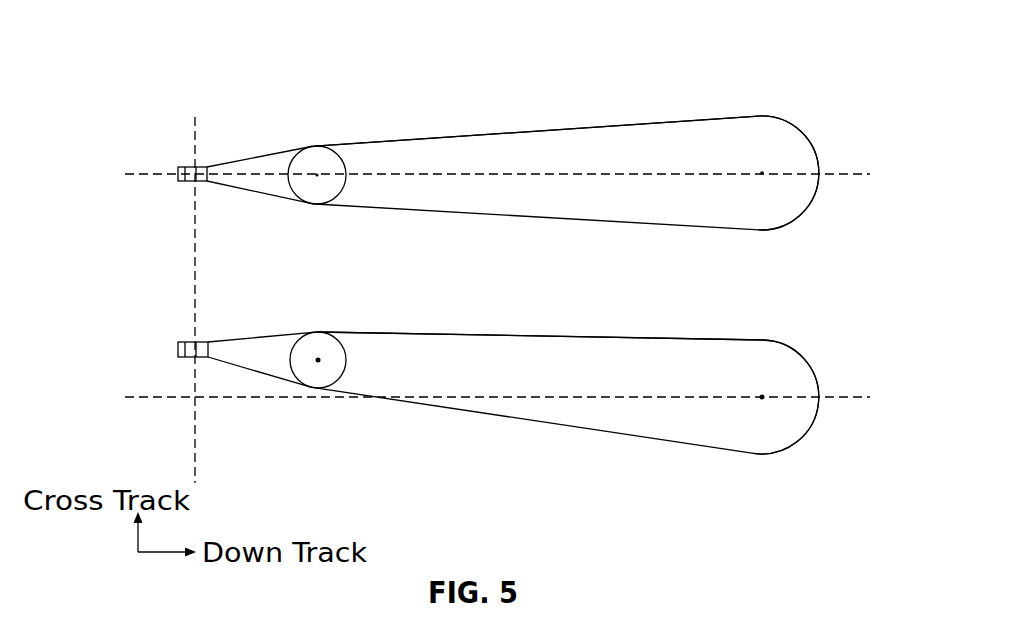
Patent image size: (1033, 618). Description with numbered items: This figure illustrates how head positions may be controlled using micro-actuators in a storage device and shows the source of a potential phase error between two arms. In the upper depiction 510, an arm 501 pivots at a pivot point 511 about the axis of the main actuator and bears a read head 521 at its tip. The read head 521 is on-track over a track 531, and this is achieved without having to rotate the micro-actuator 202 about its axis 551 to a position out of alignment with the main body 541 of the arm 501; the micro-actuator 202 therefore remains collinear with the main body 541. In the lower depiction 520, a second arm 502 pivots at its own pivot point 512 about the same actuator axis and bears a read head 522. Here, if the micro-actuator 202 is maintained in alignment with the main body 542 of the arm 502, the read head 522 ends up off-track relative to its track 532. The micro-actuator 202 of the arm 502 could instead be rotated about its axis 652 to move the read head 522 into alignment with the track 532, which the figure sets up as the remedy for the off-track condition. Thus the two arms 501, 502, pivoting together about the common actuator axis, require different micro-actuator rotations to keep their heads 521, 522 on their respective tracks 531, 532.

The on-track arm configuration 510 is at (486, 227).
The off-track arm configuration 520 is at (490, 348).
The read head 521 is at (178, 167).
The read head 522 is at (208, 344).
The track 531 is at (142, 175).
The track 532 is at (150, 397).
The micro-actuator 202 is at (260, 163).
The axis 551 is at (317, 175).
The axis 652 is at (318, 360).
The main body 541 is at (663, 137).
The main body 542 is at (627, 352).
The arm 501 is at (748, 117).
The arm 502 is at (747, 340).
The pivot point 511 is at (762, 173).
The pivot point 512 is at (762, 397).